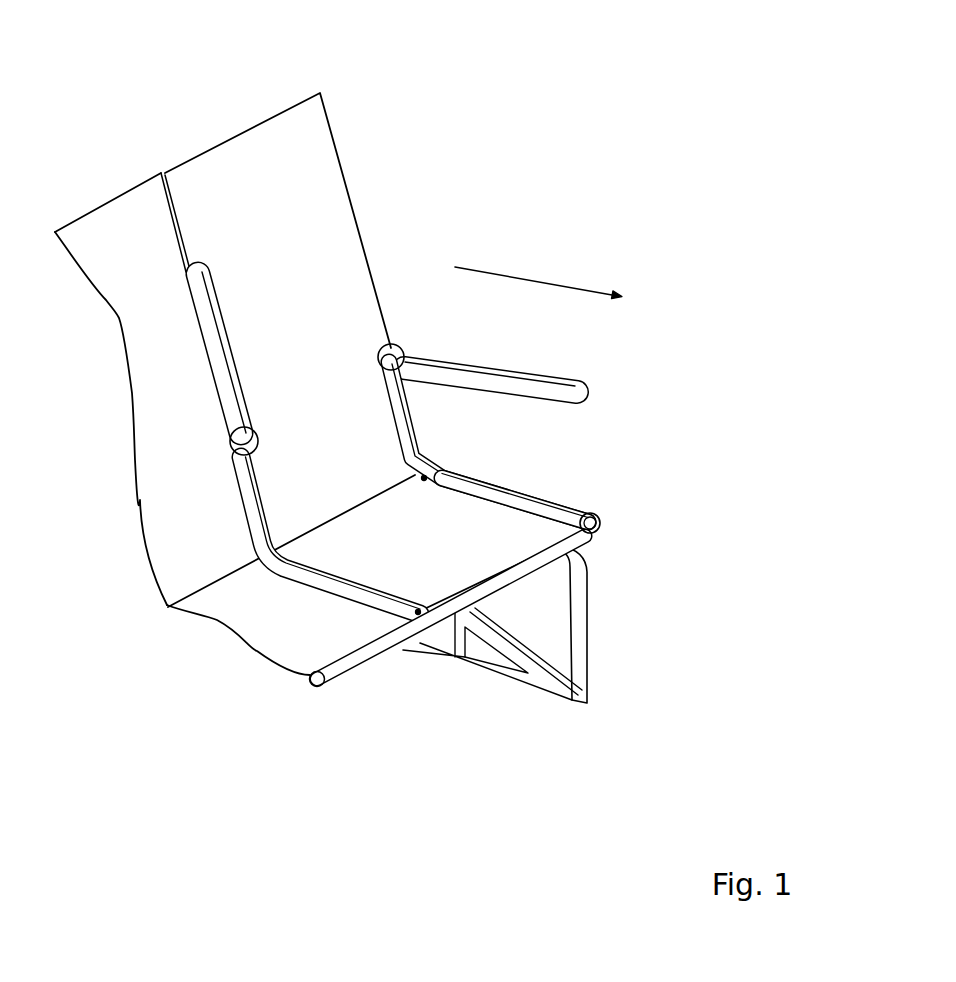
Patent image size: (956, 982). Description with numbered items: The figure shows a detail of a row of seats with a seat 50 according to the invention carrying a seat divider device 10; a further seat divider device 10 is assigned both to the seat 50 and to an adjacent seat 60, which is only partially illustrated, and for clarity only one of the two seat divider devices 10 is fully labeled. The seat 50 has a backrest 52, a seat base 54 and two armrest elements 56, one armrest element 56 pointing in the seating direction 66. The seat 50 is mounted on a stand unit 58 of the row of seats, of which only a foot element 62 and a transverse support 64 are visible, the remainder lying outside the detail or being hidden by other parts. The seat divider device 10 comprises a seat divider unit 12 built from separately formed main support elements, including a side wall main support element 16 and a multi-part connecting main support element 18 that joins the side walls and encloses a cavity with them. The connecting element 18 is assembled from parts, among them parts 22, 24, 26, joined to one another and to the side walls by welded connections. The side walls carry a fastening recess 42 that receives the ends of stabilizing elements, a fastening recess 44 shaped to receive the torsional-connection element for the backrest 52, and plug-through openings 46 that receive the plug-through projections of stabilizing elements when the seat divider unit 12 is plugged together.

The seat divider device 10 is at (574, 466).
The seat divider unit 12 is at (418, 620).
The main support element 16 is at (412, 455).
The main support element 18 is at (578, 494).
The part 22 is at (386, 346).
The part 24 is at (412, 407).
The part 26 is at (594, 535).
The fastening recess 42 is at (615, 643).
The fastening recess 44 is at (403, 345).
The plug-through opening 46 is at (592, 530).
The seat 50 is at (372, 391).
The backrest 52 is at (318, 192).
The seat base 54 is at (455, 540).
The armrest element 56 is at (208, 295).
The stand unit 58 is at (567, 671).
The seat 60 is at (150, 172).
The foot element 62 is at (585, 686).
The transverse support 64 is at (345, 667).
The seating direction 66 is at (540, 277).